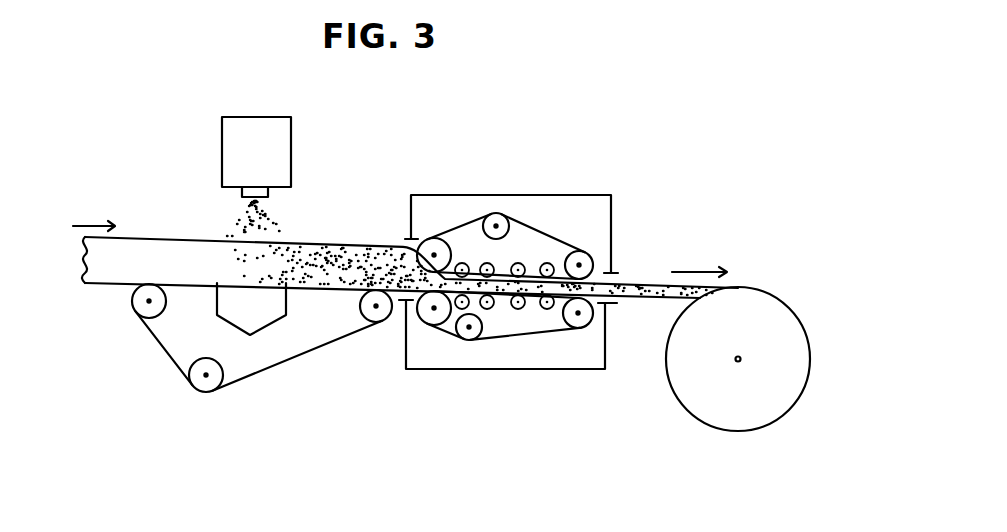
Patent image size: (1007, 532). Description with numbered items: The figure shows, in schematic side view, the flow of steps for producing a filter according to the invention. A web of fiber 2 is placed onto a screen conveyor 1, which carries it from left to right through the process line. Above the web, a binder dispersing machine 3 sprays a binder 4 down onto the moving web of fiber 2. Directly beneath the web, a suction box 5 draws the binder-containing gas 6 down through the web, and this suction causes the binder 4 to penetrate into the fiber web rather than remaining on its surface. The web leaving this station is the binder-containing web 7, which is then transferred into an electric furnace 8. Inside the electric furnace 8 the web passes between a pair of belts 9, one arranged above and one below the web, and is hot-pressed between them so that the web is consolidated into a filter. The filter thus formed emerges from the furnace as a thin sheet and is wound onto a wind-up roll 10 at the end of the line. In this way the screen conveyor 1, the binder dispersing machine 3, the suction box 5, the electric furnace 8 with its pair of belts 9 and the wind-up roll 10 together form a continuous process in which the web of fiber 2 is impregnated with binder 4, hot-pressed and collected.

The screen conveyor 1 is at (167, 353).
The web of fiber 2 is at (135, 253).
The binder dispersing machine 3 is at (253, 147).
The binder 4 is at (238, 162).
The suction box 5 is at (263, 309).
The binder-containing gas 6 is at (260, 215).
The binder-containing web 7 is at (358, 258).
The electric furnace 8 is at (442, 213).
The pair of belts 9 is at (530, 225).
The wind-up roll 10 is at (783, 363).